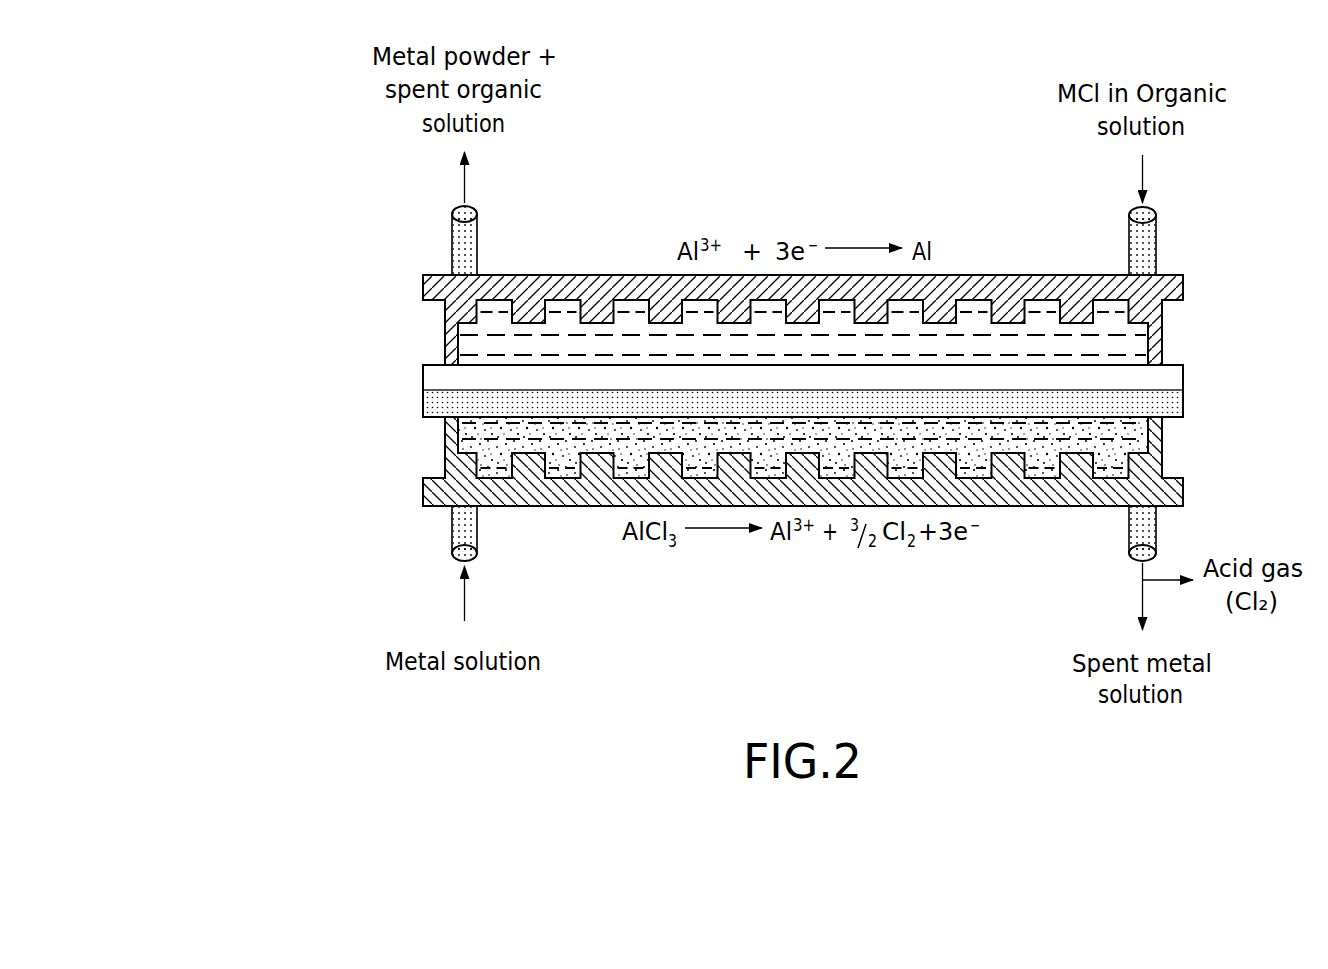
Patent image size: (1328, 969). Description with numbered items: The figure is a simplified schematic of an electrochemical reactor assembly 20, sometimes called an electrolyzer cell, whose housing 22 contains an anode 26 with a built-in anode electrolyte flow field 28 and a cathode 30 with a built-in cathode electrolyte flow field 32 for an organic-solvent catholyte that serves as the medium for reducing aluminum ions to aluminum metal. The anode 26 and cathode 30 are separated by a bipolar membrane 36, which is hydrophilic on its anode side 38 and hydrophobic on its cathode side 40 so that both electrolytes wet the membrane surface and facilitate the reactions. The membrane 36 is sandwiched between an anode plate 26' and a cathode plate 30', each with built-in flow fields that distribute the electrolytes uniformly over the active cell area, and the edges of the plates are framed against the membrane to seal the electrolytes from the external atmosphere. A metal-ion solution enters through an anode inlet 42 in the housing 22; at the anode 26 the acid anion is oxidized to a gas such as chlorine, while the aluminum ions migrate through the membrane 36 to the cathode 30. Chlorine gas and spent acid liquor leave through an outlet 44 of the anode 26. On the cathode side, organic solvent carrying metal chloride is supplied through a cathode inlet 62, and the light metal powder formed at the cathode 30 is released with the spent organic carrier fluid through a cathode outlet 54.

The electrochemical reactor assembly 20 is at (680, 337).
The reactor housing 22 is at (1163, 329).
The anode 26 is at (725, 447).
The anode plate 26' is at (670, 490).
The anode electrolyte flow field 28 is at (1110, 437).
The cathode 30 is at (712, 331).
The cathode plate 30' is at (669, 297).
The cathode electrolyte flow field 32 is at (1110, 343).
The bipolar membrane 36 is at (405, 377).
The anode side 38 is at (610, 418).
The cathode side 40 is at (638, 364).
The anode inlet 42 is at (452, 553).
The outlet 44 is at (1129, 553).
The cathode outlet 54 is at (478, 213).
The cathode inlet 62 is at (1157, 240).